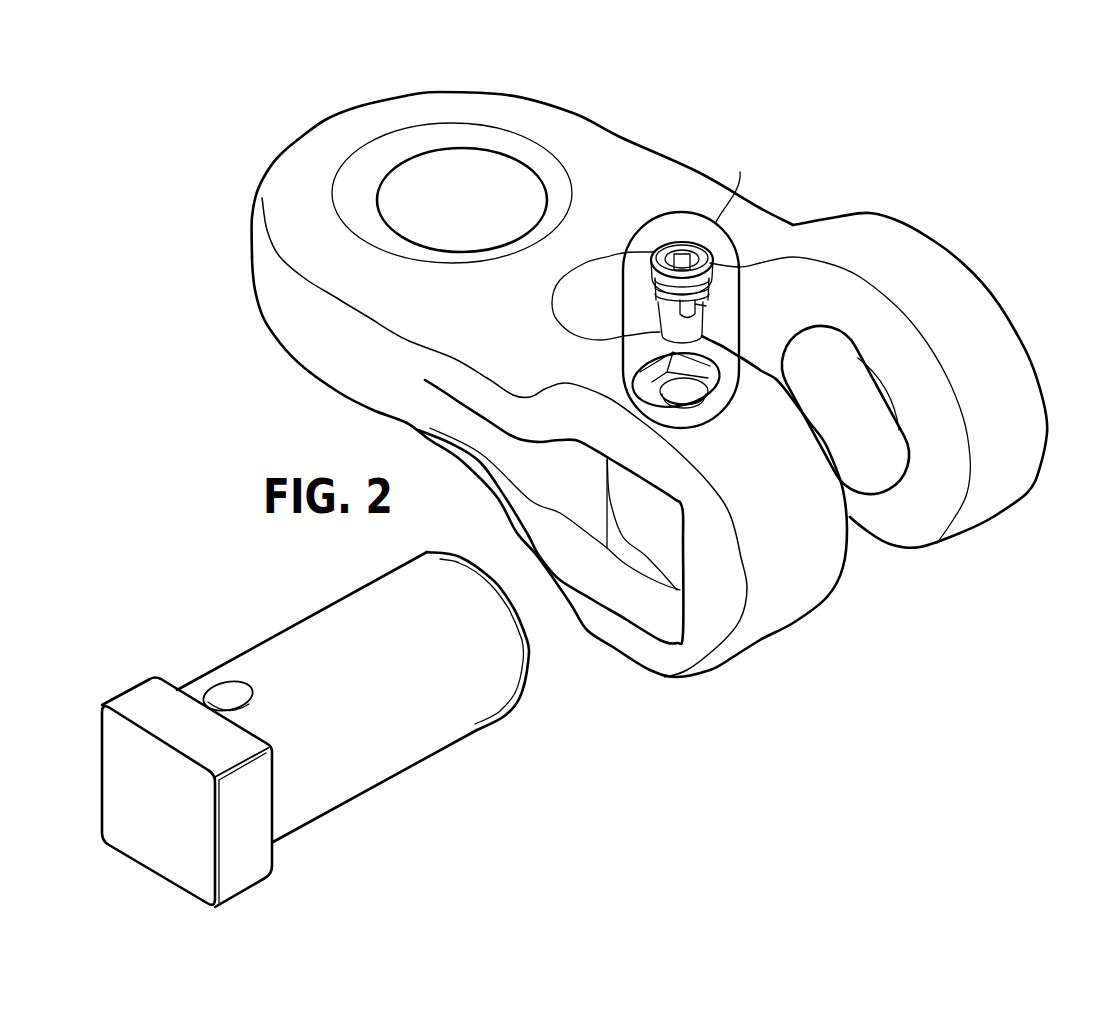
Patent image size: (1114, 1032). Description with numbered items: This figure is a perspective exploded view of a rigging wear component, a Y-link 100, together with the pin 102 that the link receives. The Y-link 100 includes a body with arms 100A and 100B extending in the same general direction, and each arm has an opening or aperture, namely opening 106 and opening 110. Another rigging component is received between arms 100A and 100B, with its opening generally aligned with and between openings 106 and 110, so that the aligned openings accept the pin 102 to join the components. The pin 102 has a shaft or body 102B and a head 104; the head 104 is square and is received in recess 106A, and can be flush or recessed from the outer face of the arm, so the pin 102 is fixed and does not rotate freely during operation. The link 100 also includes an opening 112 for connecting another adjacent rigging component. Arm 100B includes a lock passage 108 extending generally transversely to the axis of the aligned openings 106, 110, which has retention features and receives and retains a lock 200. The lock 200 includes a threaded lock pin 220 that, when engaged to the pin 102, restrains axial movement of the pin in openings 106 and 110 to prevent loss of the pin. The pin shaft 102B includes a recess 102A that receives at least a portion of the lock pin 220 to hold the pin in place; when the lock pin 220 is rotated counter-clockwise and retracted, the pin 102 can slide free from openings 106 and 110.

The Y-link 100 is at (673, 381).
The arm 100A is at (901, 380).
The arm 100B is at (593, 460).
The pin 102 is at (327, 729).
The recess 102A is at (228, 692).
The pin shaft 102B is at (385, 778).
The head 104 is at (137, 688).
The opening 106 is at (852, 566).
The recess 106A is at (661, 612).
The lock passage 108 is at (700, 402).
The opening 110 is at (822, 352).
The opening 112 is at (470, 230).
The lock 200 is at (672, 285).
The lock pin 220 is at (677, 238).